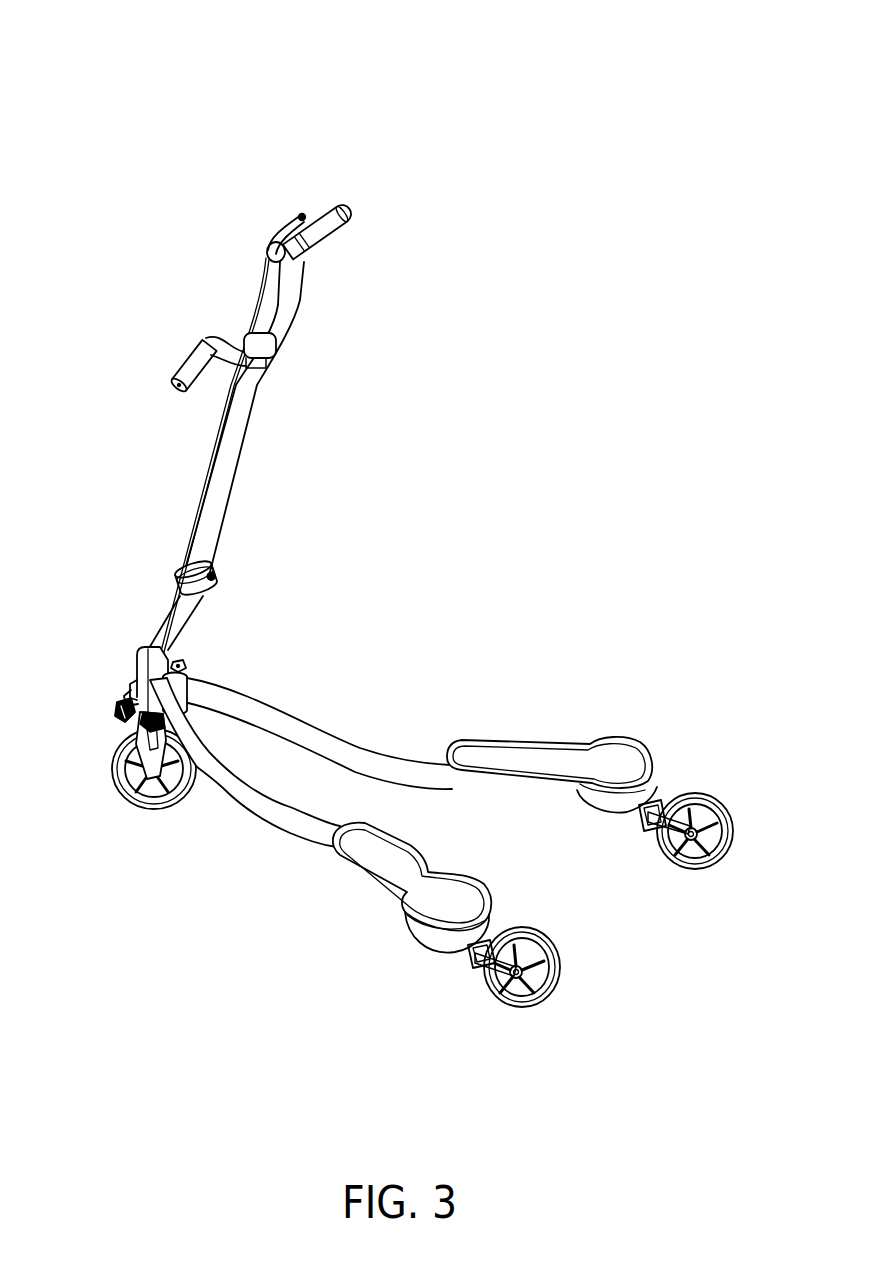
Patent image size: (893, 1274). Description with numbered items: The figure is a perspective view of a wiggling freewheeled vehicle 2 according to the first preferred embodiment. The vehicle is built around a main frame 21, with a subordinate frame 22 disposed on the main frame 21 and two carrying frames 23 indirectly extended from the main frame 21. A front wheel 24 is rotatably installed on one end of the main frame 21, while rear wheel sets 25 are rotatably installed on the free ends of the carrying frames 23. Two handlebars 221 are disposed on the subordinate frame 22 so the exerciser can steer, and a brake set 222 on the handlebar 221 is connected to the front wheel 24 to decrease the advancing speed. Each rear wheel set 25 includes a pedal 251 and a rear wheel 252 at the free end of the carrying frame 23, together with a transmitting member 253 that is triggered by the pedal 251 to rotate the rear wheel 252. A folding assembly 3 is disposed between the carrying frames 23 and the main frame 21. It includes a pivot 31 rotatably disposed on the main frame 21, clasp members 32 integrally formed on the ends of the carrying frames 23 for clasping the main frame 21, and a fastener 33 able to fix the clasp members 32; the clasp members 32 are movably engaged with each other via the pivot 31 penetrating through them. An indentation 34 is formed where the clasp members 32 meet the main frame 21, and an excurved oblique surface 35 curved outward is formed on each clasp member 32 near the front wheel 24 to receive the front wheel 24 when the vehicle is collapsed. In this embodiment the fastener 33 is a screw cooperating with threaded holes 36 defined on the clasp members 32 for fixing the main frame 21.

The wiggling freewheeled vehicle 2 is at (96, 86).
The folding assembly 3 is at (172, 637).
The main frame 21 is at (170, 586).
The subordinate frame 22 is at (200, 507).
The carrying frame 23 is at (358, 748).
The front wheel 24 is at (150, 807).
The rear wheel set 25 is at (566, 825).
The pivot 31 is at (184, 663).
The clasp member 32 is at (160, 652).
The fastener 33 is at (133, 690).
The indentation 34 is at (190, 674).
The excurved oblique surface 35 is at (123, 708).
The threaded hole 36 is at (137, 686).
The handlebar 221 is at (345, 236).
The brake set 222 is at (290, 244).
The pedal 251 is at (555, 743).
The rear wheel 252 is at (713, 853).
The transmitting member 253 is at (663, 802).